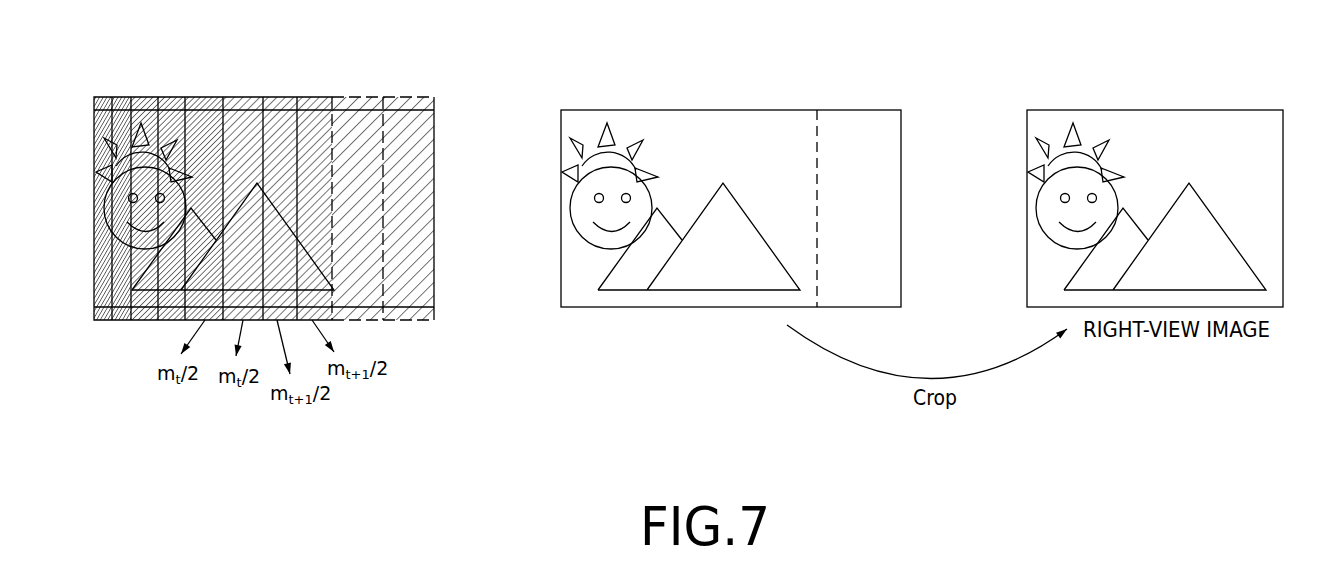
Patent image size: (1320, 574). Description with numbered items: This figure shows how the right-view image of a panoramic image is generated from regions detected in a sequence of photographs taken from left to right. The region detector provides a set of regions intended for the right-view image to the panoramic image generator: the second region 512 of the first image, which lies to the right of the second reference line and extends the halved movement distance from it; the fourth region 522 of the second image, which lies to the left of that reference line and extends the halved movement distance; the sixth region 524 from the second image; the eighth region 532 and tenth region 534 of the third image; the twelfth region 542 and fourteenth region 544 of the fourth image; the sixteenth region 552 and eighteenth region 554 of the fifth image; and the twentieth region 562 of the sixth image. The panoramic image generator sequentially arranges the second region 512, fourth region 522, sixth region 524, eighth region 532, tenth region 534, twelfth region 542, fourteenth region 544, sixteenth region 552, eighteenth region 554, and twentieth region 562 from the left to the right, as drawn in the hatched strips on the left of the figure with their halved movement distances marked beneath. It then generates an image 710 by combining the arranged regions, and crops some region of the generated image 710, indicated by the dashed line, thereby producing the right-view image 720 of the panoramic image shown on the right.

The second region 512 is at (102, 97).
The fourth region 522 is at (120, 97).
The sixth region 524 is at (140, 97).
The eighth region 532 is at (168, 97).
The tenth region 534 is at (203, 97).
The twelfth region 542 is at (243, 97).
The fourteenth region 544 is at (278, 97).
The sixteenth region 552 is at (313, 97).
The eighteenth region 554 is at (358, 97).
The twentieth region 562 is at (408, 97).
The image 710 is at (774, 102).
The right-view image 720 is at (1173, 102).